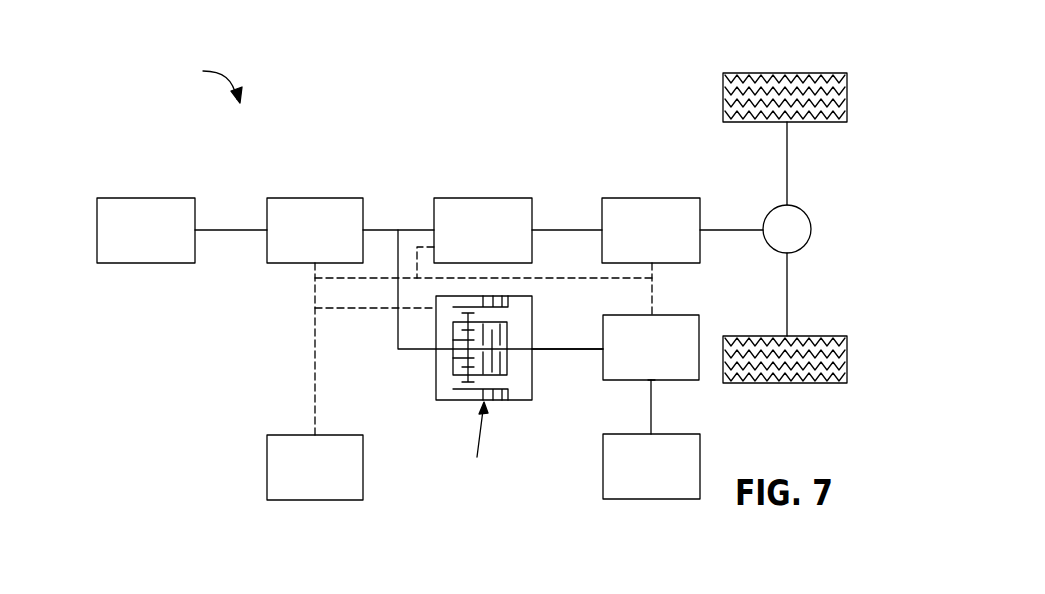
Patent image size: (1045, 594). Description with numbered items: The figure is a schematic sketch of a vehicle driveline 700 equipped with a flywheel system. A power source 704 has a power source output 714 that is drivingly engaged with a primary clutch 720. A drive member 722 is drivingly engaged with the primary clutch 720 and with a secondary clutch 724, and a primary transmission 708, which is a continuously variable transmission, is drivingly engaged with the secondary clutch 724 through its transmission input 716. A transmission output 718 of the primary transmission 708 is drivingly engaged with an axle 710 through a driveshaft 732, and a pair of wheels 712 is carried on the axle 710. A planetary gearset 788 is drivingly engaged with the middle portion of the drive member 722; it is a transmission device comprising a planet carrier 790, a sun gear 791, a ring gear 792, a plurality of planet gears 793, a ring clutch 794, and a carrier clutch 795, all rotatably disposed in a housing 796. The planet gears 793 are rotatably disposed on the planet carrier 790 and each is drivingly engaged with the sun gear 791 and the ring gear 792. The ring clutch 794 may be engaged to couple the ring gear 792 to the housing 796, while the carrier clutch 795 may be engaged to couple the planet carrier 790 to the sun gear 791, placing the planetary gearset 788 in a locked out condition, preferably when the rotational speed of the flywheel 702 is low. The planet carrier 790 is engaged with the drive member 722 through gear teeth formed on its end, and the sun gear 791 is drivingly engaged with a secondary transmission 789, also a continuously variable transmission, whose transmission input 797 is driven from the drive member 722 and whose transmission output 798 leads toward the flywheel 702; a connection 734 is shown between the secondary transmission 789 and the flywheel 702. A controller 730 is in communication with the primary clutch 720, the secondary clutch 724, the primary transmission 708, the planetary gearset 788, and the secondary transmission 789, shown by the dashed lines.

The vehicle driveline 700 is at (205, 83).
The flywheel 702 is at (651, 499).
The power source 704 is at (148, 198).
The primary transmission 708 is at (648, 198).
The axle 710 is at (792, 294).
The wheels 712 is at (784, 73).
The power source output 714 is at (233, 230).
The transmission input 716 is at (602, 230).
The transmission output 718 is at (700, 230).
The primary clutch 720 is at (311, 198).
The drive member 722 is at (383, 230).
The secondary clutch 724 is at (481, 198).
The controller 730 is at (313, 500).
The driveshaft 732 is at (735, 230).
The control connection 734 is at (652, 405).
The planetary gearset 788 is at (477, 442).
The secondary transmission 789 is at (676, 315).
The planet carrier 790 is at (452, 357).
The sun gear 791 is at (468, 345).
The ring gear 792 is at (455, 399).
The planet gears 793 is at (468, 316).
The ring clutch 794 is at (508, 397).
The carrier clutch 795 is at (508, 333).
The housing 796 is at (435, 385).
The transmission input 797 is at (600, 350).
The transmission output 798 is at (651, 382).